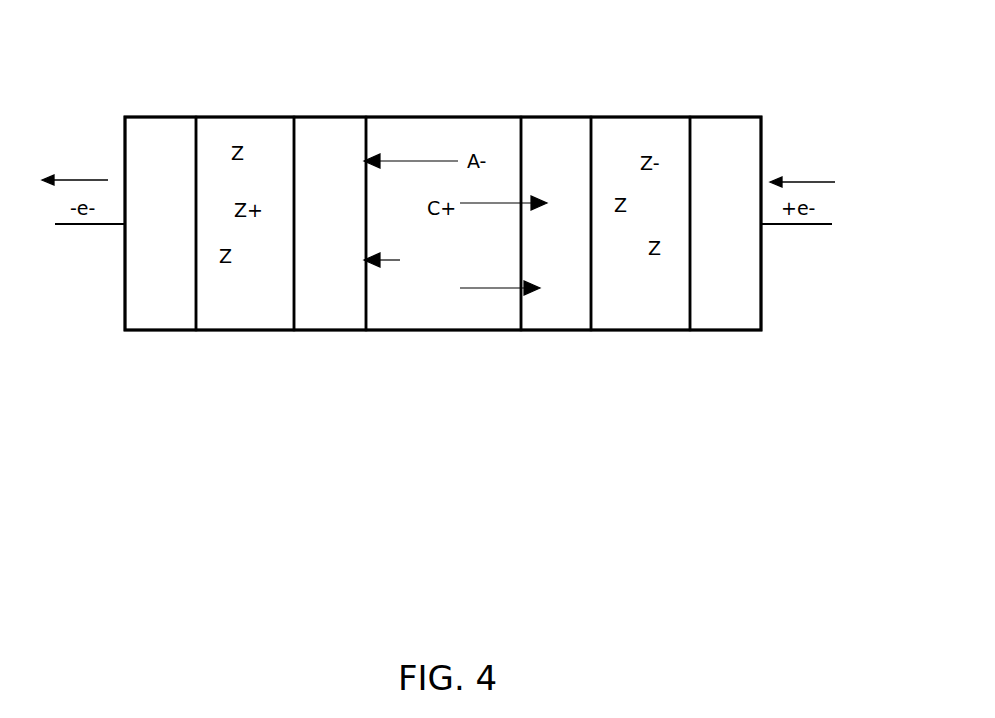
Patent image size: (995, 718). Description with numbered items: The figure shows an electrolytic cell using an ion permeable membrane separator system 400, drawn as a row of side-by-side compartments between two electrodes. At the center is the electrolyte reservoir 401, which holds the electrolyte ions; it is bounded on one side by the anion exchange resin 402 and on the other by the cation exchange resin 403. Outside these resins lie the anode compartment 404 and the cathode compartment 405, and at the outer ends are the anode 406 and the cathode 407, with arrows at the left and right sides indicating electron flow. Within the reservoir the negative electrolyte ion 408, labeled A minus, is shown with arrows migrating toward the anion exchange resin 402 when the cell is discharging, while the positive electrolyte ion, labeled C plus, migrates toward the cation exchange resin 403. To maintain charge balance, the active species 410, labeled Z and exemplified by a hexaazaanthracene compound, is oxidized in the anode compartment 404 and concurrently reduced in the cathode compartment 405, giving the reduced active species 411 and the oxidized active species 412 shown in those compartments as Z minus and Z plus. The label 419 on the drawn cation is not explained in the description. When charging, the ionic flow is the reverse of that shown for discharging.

The electrolytic cell using an ion permeable membrane separator system 400 is at (438, 394).
The electrolyte reservoir 401 is at (421, 138).
The anion exchange resin 402 is at (338, 137).
The cation exchange resin 403 is at (556, 135).
The anode compartment 404 is at (259, 132).
The cathode compartment 405 is at (648, 132).
The anode 406 is at (169, 137).
The cathode 407 is at (733, 138).
The negative electrolyte ion 408 is at (404, 288).
The active species 410 is at (219, 279).
The reduced active species 411 is at (257, 313).
The oxidized active species 412 is at (618, 316).
The cation 419 is at (470, 321).